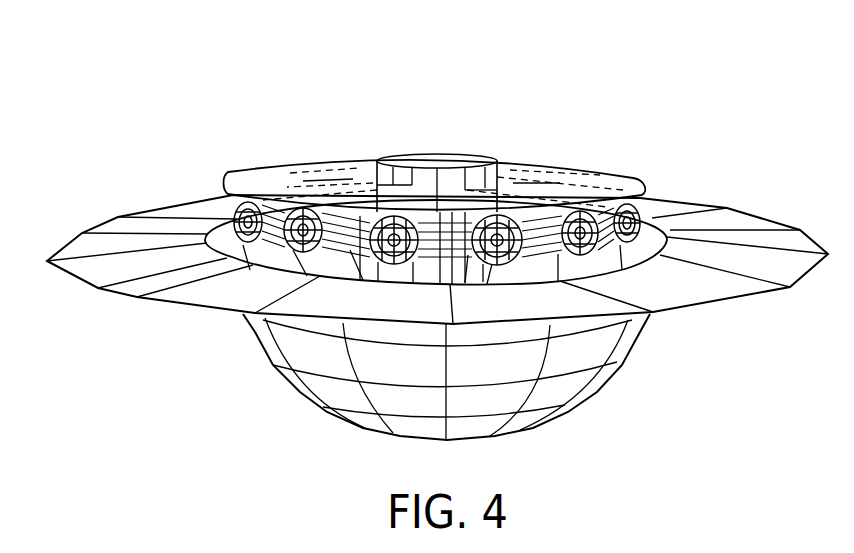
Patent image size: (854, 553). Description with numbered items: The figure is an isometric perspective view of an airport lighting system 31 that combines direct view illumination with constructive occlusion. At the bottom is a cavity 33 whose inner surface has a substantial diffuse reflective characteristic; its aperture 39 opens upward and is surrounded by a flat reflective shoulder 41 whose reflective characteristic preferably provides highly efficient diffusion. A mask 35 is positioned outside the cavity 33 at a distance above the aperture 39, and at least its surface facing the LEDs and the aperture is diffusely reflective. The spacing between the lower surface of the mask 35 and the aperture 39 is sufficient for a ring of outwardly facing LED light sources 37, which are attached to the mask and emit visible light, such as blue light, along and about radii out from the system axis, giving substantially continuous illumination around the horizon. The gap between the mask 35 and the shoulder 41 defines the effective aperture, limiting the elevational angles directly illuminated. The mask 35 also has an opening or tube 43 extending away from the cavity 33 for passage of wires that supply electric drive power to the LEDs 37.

The system 31 is at (186, 102).
The cavity 33 is at (282, 390).
The mask 35 is at (642, 168).
The LED light sources 37 is at (618, 248).
The aperture 39 is at (676, 229).
The flat reflective shoulder 41 is at (104, 212).
The opening or tube 43 is at (466, 145).